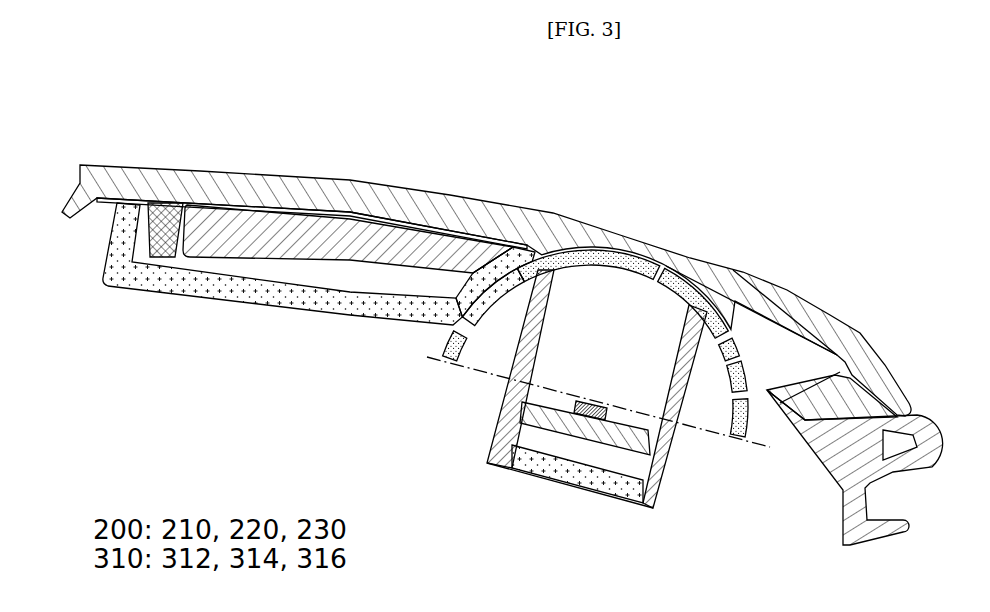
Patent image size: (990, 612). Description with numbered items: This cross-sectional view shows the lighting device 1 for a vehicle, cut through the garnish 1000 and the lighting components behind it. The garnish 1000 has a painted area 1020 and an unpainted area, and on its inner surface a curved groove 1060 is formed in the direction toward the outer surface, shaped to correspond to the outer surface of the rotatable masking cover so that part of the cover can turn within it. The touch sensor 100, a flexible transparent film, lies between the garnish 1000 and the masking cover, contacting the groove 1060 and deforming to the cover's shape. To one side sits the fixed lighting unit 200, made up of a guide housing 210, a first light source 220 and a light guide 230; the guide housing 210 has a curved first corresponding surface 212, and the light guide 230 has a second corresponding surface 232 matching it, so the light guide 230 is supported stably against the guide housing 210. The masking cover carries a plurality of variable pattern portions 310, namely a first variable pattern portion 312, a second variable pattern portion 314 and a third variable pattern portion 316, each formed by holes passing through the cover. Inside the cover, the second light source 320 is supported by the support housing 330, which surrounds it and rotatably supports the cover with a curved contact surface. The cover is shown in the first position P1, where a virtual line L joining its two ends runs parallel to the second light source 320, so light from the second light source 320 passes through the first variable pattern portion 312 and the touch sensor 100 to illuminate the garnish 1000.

The lighting device 1 is at (259, 436).
The touch sensor 100 is at (650, 351).
The garnish 1000 is at (486, 253).
The painted area 1020 is at (253, 207).
The groove 1060 is at (700, 296).
The fixed lighting unit 200 is at (323, 234).
The guide housing 210 is at (207, 297).
The first corresponding surface 212 is at (502, 272).
The first light source 220 is at (168, 213).
The light guide 230 is at (348, 206).
The second corresponding surface 232 is at (483, 273).
The variable pattern portions 310 is at (658, 303).
The first variable pattern portion 312 is at (663, 258).
The second variable pattern portion 314 is at (472, 343).
The third variable pattern portion 316 is at (753, 338).
The second light source 320 is at (580, 418).
The support housing 330 is at (663, 470).
The first position P1 is at (672, 268).
The virtual line L is at (607, 410).